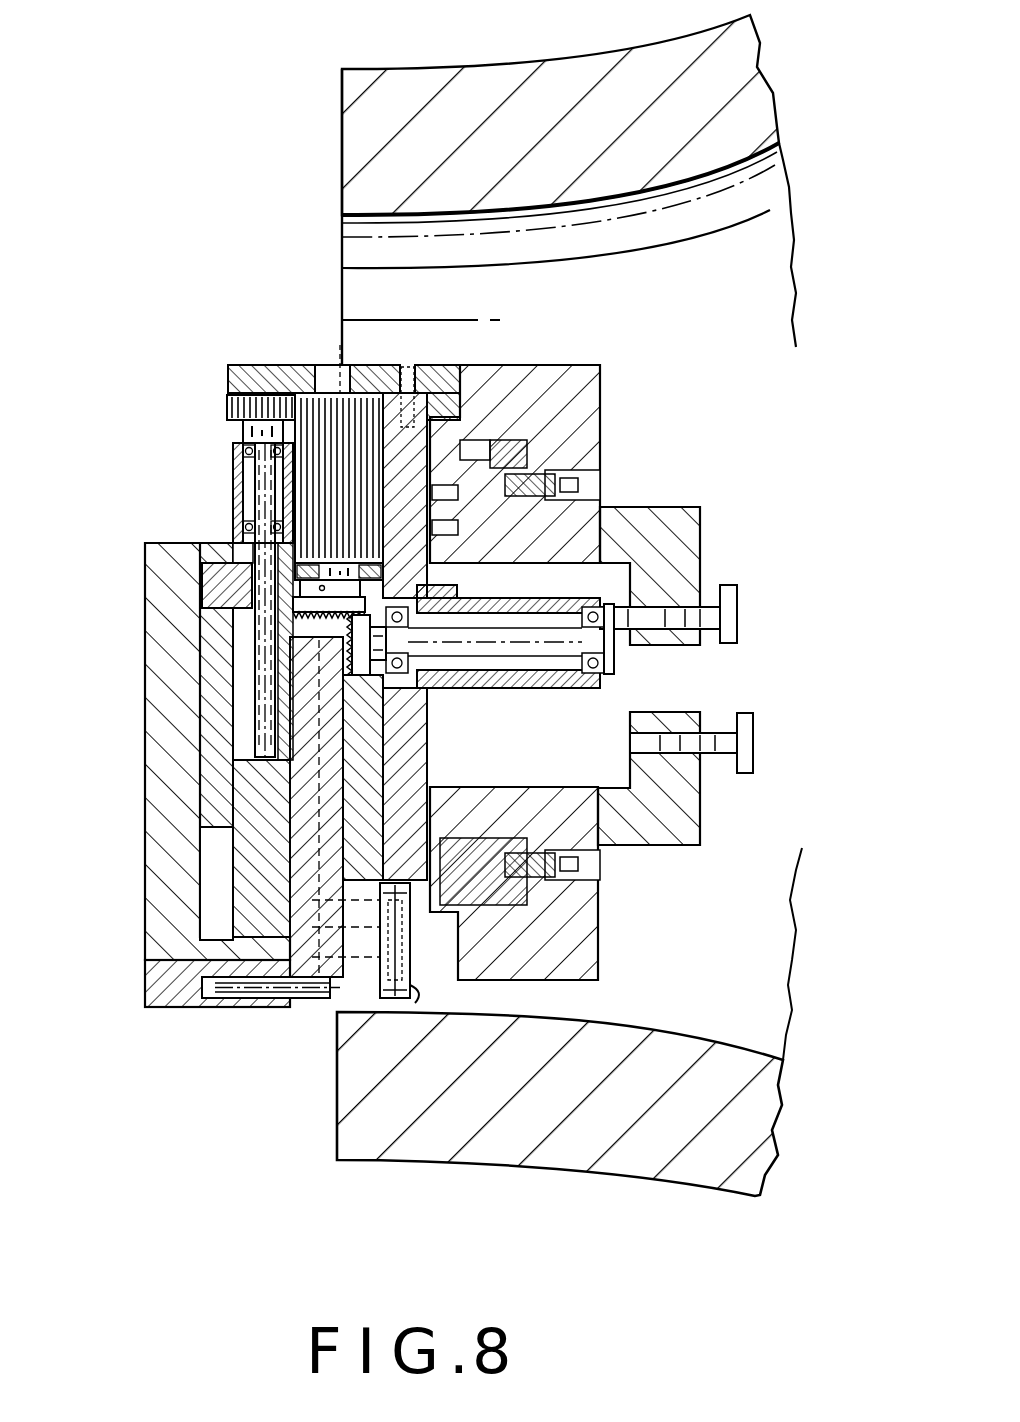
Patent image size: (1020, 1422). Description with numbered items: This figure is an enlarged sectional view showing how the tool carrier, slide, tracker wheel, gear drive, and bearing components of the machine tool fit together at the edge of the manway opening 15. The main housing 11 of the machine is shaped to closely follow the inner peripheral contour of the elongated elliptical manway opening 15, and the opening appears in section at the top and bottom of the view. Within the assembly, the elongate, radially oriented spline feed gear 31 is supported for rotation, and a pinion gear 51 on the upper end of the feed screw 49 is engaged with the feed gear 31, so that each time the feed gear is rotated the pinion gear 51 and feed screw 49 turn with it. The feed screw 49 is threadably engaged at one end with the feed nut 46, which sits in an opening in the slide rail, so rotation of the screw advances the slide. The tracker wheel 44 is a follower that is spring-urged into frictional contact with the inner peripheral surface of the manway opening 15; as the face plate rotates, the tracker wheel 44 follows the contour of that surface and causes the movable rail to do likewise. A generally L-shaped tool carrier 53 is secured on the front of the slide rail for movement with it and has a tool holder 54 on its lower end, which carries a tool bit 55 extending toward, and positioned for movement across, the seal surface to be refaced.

The manway opening 15 is at (403, 88).
The housing 11 is at (574, 368).
The spline feed gear 31 is at (318, 502).
The tracker wheel 44 is at (413, 990).
The feed nut 46 is at (213, 578).
The feed screw 49 is at (255, 682).
The pinion gear 51 is at (233, 408).
The tool carrier 53 is at (150, 918).
The tool holder 54 is at (170, 992).
The tool bit 55 is at (314, 1002).